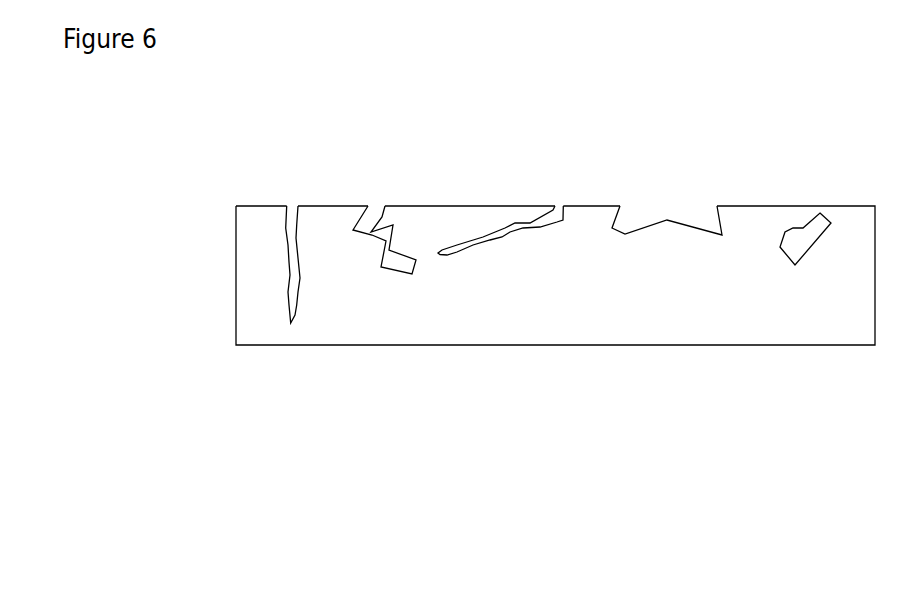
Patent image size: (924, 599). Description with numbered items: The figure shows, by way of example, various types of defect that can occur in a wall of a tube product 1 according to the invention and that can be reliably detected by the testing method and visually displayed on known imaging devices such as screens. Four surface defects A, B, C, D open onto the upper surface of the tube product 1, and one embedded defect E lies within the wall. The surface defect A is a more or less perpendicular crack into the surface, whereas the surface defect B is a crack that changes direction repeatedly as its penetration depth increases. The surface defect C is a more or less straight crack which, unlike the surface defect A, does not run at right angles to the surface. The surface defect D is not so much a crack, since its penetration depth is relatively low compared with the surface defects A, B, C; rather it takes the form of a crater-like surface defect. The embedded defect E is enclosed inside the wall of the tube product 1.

The tube product 1 is at (557, 472).
The surface defect A is at (292, 188).
The surface defect B is at (376, 186).
The surface defect C is at (556, 189).
The surface defect D is at (665, 190).
The embedded defect E is at (803, 224).